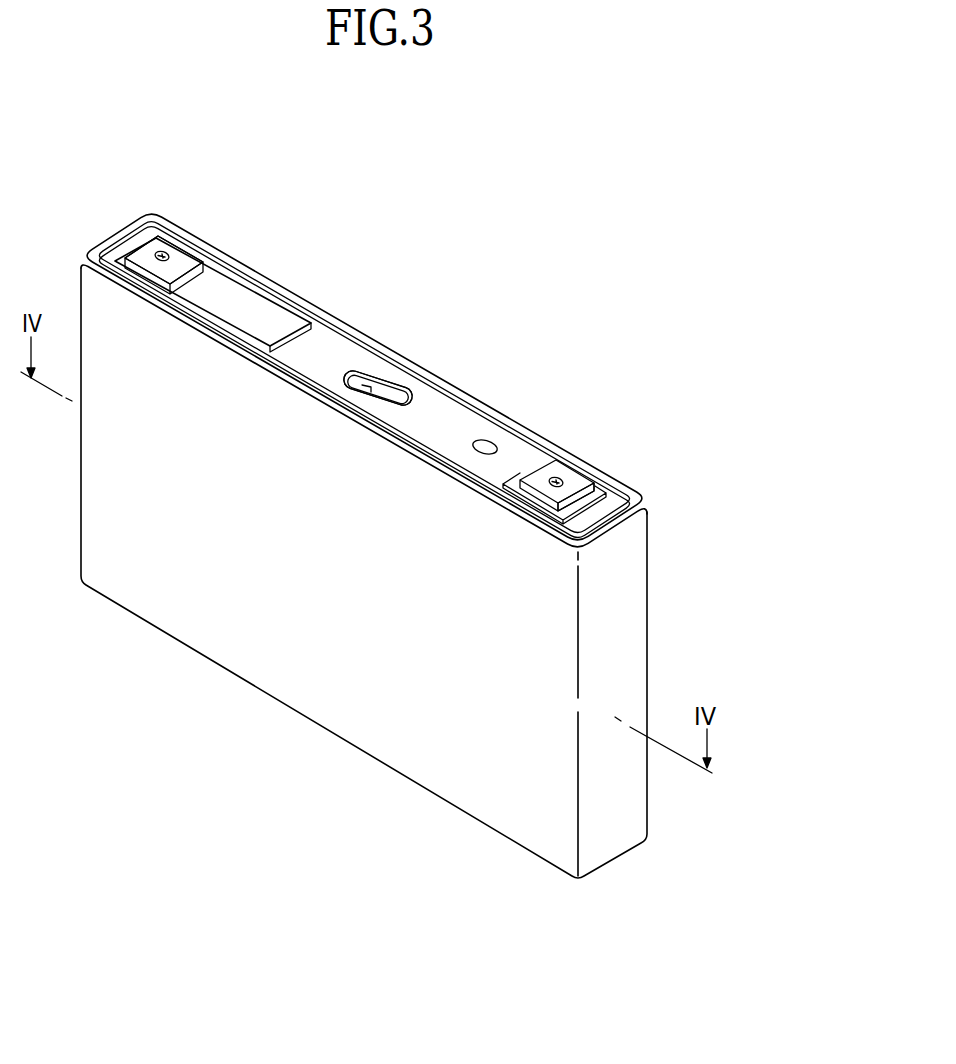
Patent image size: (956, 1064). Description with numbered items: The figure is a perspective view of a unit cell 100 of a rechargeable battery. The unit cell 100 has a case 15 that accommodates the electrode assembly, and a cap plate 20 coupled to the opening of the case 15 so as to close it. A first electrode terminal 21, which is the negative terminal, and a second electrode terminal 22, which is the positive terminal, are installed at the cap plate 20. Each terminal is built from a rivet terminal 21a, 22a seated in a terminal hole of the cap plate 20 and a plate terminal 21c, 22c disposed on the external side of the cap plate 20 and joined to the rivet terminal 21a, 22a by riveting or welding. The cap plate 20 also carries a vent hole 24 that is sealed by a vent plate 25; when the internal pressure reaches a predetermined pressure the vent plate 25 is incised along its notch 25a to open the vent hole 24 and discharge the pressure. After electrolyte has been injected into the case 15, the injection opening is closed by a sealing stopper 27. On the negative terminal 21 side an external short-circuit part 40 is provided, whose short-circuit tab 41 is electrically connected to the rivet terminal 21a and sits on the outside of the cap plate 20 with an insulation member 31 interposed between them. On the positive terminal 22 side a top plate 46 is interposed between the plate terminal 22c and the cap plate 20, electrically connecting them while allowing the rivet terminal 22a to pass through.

The unit cell 100 is at (364, 533).
The case 15 is at (290, 685).
The cap plate 20 is at (337, 350).
The first electrode terminal 21 is at (171, 245).
The rivet terminal 21a is at (156, 252).
The plate terminal 21c is at (187, 258).
The second electrode terminal 22 is at (559, 465).
The rivet terminal 22a is at (557, 481).
The plate terminal 22c is at (568, 492).
The vent hole 24 is at (367, 375).
The vent plate 25 is at (383, 388).
The notch 25a is at (388, 407).
The sealing stopper 27 is at (485, 447).
The insulation member 31 is at (228, 275).
The external short-circuit part 40 is at (279, 285).
The short-circuit tab 41 is at (281, 323).
The top plate 46 is at (573, 513).